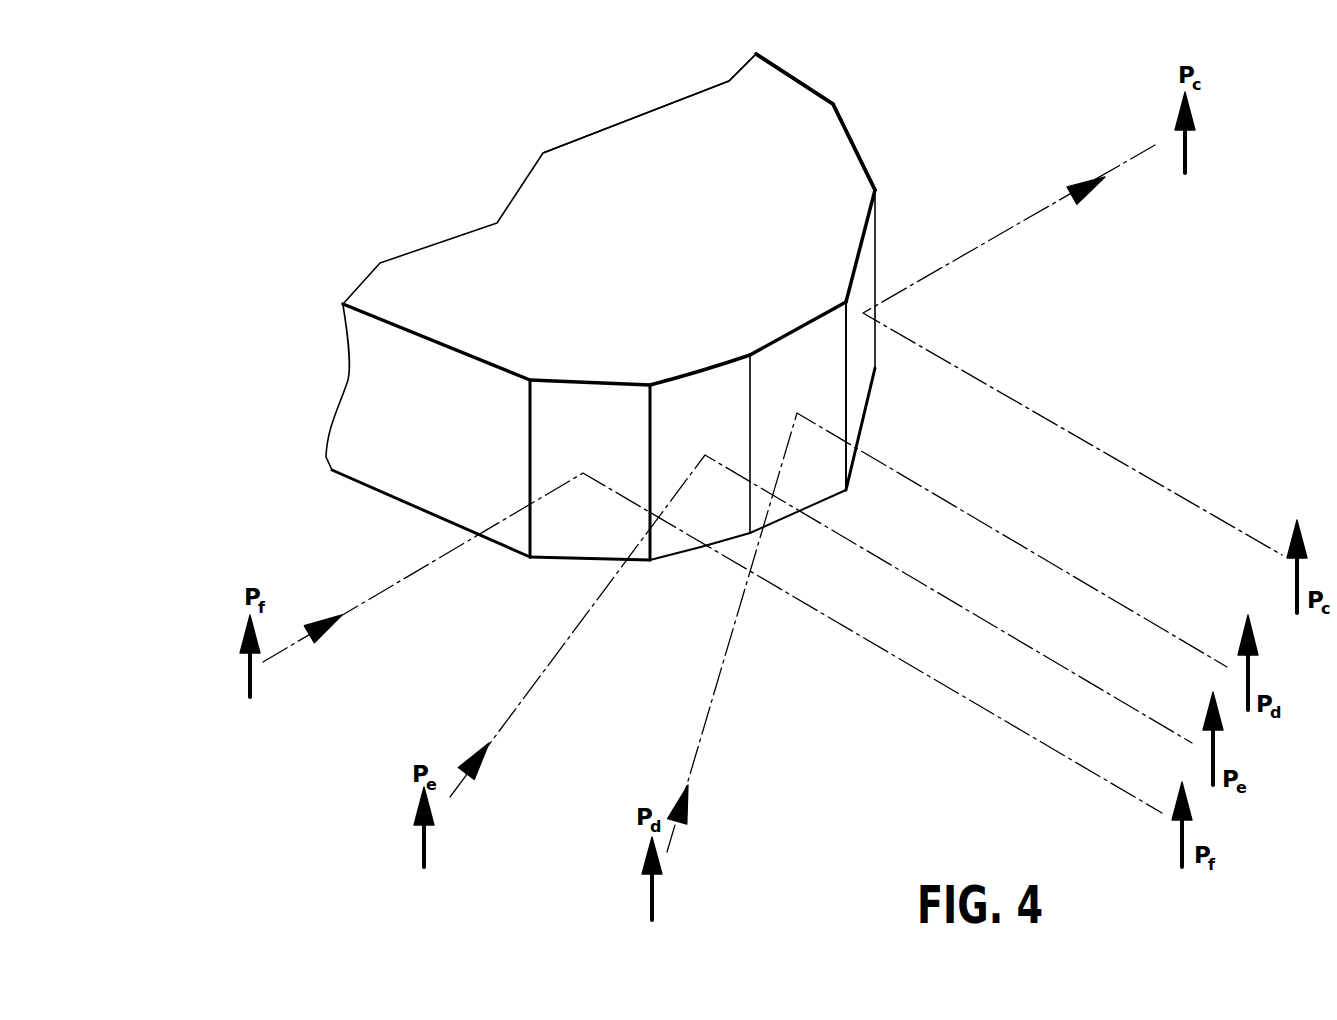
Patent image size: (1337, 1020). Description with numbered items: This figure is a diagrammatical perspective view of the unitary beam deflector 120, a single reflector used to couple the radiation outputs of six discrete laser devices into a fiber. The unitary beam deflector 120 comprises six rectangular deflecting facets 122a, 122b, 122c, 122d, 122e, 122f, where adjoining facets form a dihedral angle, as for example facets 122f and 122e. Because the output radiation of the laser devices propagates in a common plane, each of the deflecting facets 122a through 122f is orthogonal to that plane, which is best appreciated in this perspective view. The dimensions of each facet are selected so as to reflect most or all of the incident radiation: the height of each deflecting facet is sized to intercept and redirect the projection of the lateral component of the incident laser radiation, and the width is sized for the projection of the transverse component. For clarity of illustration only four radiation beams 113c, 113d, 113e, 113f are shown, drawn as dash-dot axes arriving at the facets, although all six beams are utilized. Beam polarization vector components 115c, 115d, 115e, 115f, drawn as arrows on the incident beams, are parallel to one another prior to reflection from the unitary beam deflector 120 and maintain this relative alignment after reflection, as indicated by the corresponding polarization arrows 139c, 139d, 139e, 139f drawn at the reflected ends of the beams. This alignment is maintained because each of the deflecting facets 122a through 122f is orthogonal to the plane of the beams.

The unitary beam deflector 120 is at (512, 191).
The deflecting facet 122a is at (808, 85).
The deflecting facet 122b is at (859, 152).
The deflecting facet 122c is at (873, 265).
The deflecting facet 122d is at (828, 487).
The deflecting facet 122e is at (672, 542).
The deflecting facet 122f is at (577, 540).
The output emission 113c is at (1050, 207).
The output emission 113d is at (707, 698).
The output emission 113e is at (523, 693).
The output emission 113f is at (374, 593).
The beam polarization vector component 115c is at (1187, 165).
The beam polarization vector component 115d is at (650, 893).
The beam polarization vector component 115e is at (428, 848).
The beam polarization vector component 115f is at (252, 672).
The point on axis c 139c is at (1240, 530).
The point on axis d 139d is at (1197, 643).
The point on axis e 139e is at (1155, 715).
The point on axis f 139f is at (1135, 795).